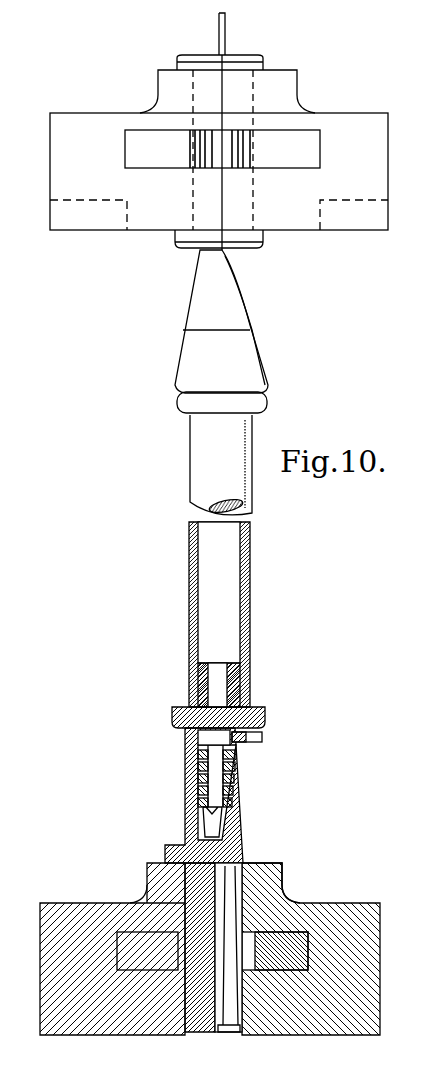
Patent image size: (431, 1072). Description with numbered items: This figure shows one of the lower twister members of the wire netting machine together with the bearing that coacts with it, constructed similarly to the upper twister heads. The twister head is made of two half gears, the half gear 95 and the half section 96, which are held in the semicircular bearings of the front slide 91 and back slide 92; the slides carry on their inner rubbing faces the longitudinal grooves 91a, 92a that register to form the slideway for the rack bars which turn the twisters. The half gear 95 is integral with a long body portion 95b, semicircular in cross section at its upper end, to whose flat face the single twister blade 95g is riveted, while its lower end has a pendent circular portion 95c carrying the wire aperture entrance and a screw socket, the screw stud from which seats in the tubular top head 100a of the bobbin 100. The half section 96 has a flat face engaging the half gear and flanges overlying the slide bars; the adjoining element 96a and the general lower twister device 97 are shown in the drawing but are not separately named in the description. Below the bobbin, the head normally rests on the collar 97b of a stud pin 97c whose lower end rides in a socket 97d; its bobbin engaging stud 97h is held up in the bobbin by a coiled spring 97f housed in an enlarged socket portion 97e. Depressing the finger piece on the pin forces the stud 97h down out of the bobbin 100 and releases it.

The front slide 91 is at (328, 610).
The longitudinal groove 91a is at (383, 951).
The back slide 92 is at (57, 1046).
The longitudinal groove 92a is at (218, 550).
The half gear 95 is at (210, 157).
The long body portion 95b is at (194, 1034).
The pendent circular portion 95c is at (231, 321).
The twister blade 95g is at (226, 35).
The half section 96 is at (242, 160).
The collar hub 96a is at (215, 915).
The valve body 97 is at (265, 1034).
The collar 97b is at (197, 740).
The stud pin 97c is at (237, 764).
The socket 97d is at (222, 822).
The enlarged socket portion 97e is at (263, 738).
The coiled spring 97f is at (186, 790).
The bobbin engaging stud 97h is at (196, 712).
The bobbin 100 is at (241, 561).
The tubular top head 100a is at (258, 407).